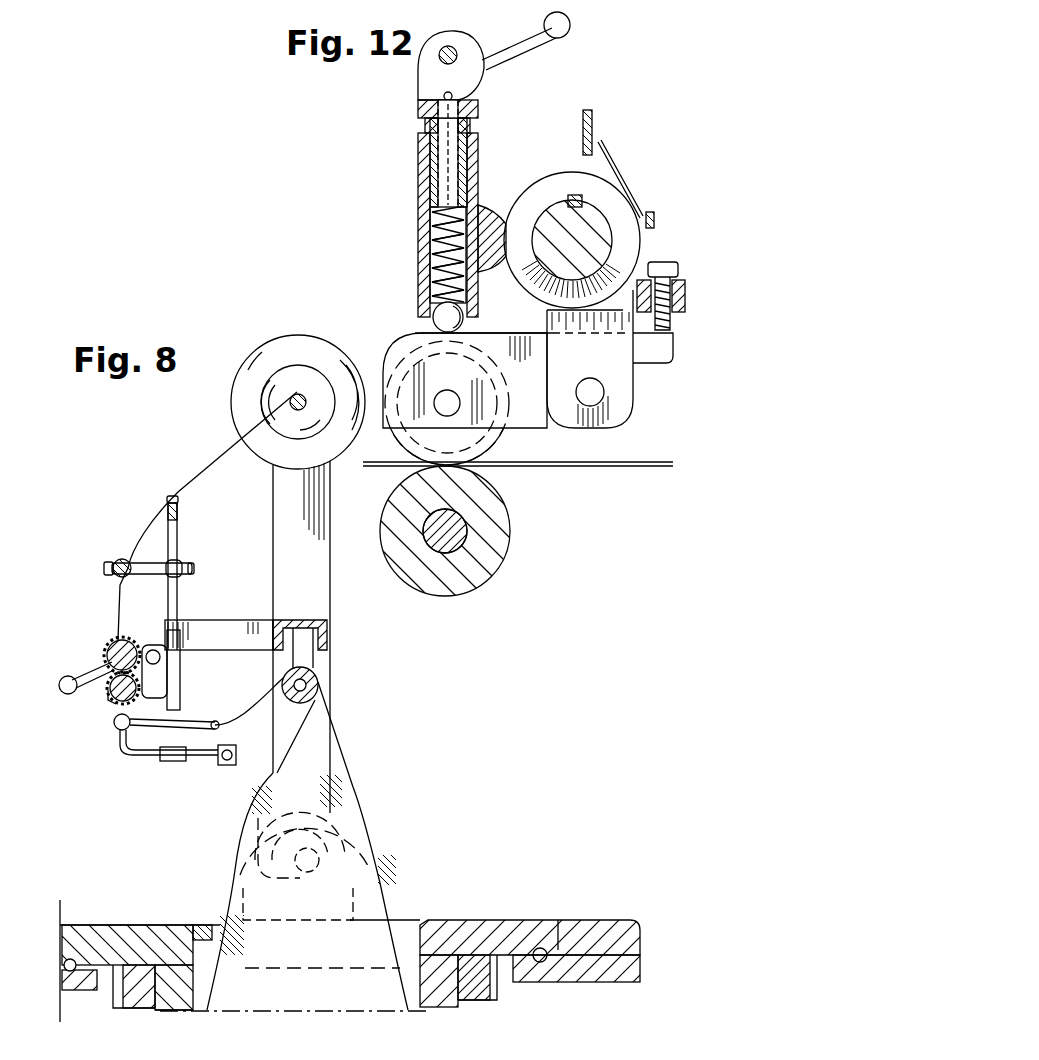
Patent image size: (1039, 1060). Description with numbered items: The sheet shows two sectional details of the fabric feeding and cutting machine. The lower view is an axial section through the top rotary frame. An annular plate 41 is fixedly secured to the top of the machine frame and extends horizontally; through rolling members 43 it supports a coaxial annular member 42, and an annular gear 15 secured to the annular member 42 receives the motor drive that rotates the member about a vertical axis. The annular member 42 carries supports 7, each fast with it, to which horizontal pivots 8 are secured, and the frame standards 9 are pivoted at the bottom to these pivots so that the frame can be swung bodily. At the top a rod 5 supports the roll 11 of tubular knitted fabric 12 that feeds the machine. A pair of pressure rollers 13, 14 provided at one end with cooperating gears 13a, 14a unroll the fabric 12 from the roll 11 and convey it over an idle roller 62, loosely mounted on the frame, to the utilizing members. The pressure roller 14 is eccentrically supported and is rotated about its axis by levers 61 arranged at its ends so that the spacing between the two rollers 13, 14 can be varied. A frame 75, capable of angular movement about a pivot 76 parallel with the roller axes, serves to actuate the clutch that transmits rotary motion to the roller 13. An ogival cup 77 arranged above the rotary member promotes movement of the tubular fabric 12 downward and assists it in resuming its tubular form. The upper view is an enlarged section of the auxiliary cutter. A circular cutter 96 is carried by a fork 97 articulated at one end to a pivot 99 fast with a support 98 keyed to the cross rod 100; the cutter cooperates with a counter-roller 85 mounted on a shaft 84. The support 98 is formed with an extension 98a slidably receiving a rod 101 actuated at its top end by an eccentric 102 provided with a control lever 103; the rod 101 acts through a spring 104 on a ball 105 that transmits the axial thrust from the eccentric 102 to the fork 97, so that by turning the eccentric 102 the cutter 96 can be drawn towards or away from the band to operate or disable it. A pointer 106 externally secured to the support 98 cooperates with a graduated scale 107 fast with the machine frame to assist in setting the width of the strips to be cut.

In FIG. 12, the eccentric 102 is at (458, 58).
In FIG. 12, the control lever 103 is at (520, 45).
In FIG. 12, the graduated scale 107 is at (593, 114).
In FIG. 12, the pointer 106 is at (608, 148).
In FIG. 12, the cross rod 100 is at (592, 222).
In FIG. 12, the support 98 is at (628, 240).
In FIG. 12, the rod 101 is at (444, 146).
In FIG. 12, the extension 98a is at (418, 176).
In FIG. 12, the spring 104 is at (430, 244).
In FIG. 12, the ball 105 is at (440, 324).
In FIG. 12, the pivot 99 is at (598, 395).
In FIG. 12, the fork 97 is at (548, 430).
In FIG. 12, the circular cutter 96 is at (480, 432).
In FIG. 12, the counter-roller 85 is at (496, 517).
In FIG. 12, the shaft 84 is at (450, 535).
In FIG. 8, the rod 5 is at (296, 396).
In FIG. 8, the roll 11 is at (305, 366).
In FIG. 8, the tubular knitted fabric 12 is at (215, 455).
In FIG. 8, the standard 9 is at (316, 585).
In FIG. 8, the pressure roller 14 is at (114, 642).
In FIG. 8, the gear 14a is at (120, 642).
In FIG. 8, the lever 61 is at (95, 672).
In FIG. 8, the frame 75 is at (214, 721).
In FIG. 8, the idle roller 62 is at (320, 680).
In FIG. 8, the gear 13a is at (112, 700).
In FIG. 8, the pressure roller 13 is at (118, 708).
In FIG. 8, the pivot 76 is at (128, 745).
In FIG. 8, the ogival cup 77 is at (345, 788).
In FIG. 8, the support 7 is at (240, 831).
In FIG. 8, the horizontal pivot 8 is at (318, 858).
In FIG. 8, the rolling member 43 is at (70, 958).
In FIG. 8, the annular member 42 is at (462, 921).
In FIG. 8, the annular plate 41 is at (598, 940).
In FIG. 8, the annular gear 15 is at (485, 987).